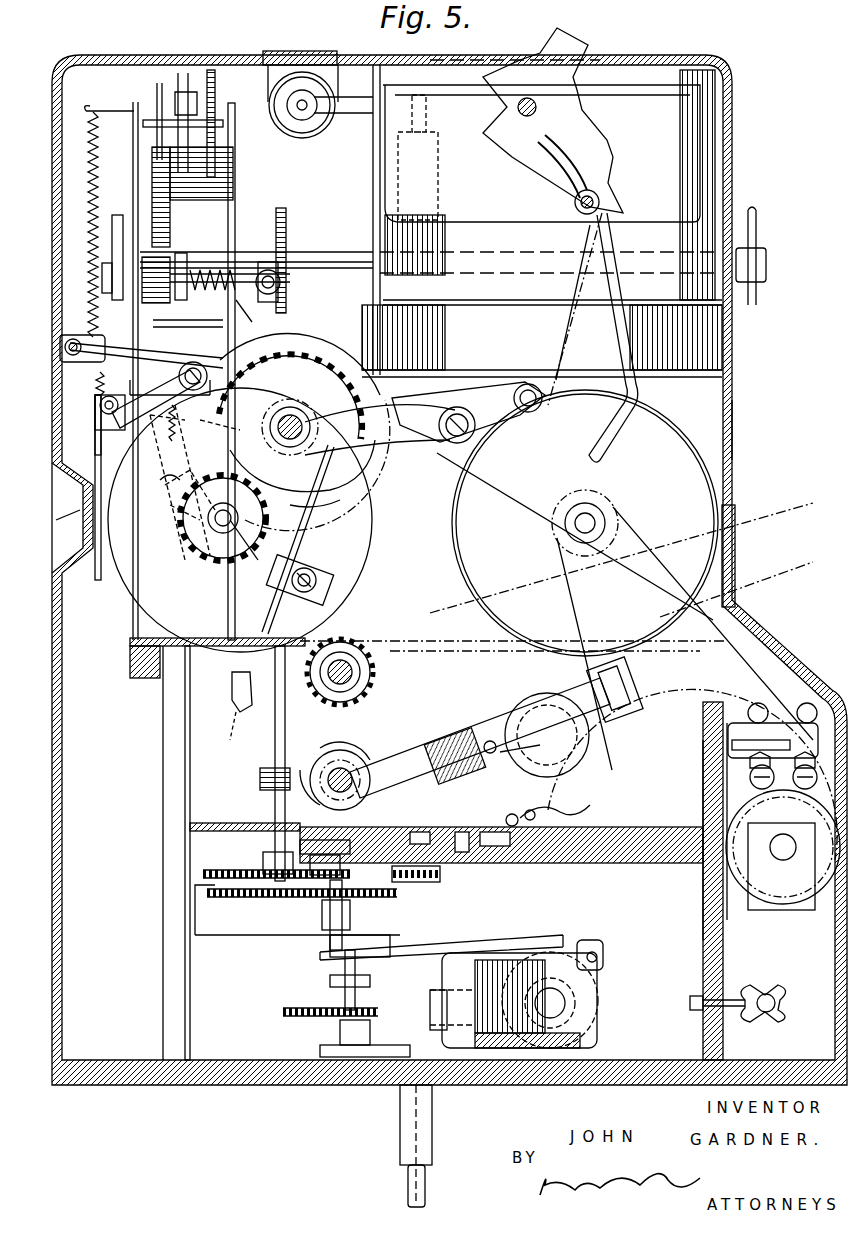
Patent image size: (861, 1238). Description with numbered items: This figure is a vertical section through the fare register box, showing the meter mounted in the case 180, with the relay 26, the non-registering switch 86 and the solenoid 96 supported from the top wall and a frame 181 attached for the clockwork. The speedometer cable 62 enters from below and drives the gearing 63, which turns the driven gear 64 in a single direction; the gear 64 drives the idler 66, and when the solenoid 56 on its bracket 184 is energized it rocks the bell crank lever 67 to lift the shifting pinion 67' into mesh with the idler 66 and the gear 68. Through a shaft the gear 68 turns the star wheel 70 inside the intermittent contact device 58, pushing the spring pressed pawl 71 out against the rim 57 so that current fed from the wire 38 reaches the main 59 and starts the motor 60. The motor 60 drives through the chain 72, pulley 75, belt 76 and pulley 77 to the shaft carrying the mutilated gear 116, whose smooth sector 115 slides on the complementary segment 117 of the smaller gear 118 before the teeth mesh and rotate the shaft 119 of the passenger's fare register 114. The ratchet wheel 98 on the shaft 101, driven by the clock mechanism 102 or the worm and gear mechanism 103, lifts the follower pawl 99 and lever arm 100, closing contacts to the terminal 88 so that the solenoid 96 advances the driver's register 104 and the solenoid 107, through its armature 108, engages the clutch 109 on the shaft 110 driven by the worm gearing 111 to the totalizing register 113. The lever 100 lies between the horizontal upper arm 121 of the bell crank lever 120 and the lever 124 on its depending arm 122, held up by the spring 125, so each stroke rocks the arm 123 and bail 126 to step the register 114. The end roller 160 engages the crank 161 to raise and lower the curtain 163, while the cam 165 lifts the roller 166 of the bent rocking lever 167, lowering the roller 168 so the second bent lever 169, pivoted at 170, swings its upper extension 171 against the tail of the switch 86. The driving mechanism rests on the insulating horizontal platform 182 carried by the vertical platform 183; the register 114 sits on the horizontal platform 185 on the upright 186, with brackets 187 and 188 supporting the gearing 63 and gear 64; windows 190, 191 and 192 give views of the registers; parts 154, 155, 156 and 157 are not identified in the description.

The relay 26 is at (722, 190).
The wire 38 is at (712, 1011).
The solenoid 56 is at (513, 1053).
The rim 57 is at (600, 840).
The intermittent contact device 58 is at (418, 830).
The main 59 is at (600, 805).
The motor 60 is at (585, 523).
The speedometer cable 62 is at (408, 1185).
The gearing 63 is at (370, 905).
The driven gear 64 is at (262, 860).
The idler 66 is at (300, 905).
The bell crank lever 67 is at (441, 935).
The shifting pinion 67' is at (326, 888).
The gear 68 is at (500, 882).
The star wheel 70 is at (462, 830).
The spring pressed pawl 71 is at (495, 830).
The chain 72 is at (612, 533).
The pulley 75 is at (700, 700).
The belt 76 is at (470, 505).
The pulley 77 is at (368, 464).
The non-registering switch 86 is at (575, 45).
The terminal 88 is at (542, 111).
The solenoid 96 is at (378, 192).
The ratchet wheel 98 is at (118, 215).
The follower pawl 99 is at (99, 405).
The lever arm 100 is at (141, 338).
The shaft 101 is at (288, 250).
The clock mechanism 102 is at (232, 170).
The worm and gear mechanism 103 is at (282, 288).
The fare register 104 is at (320, 138).
The solenoid 107 is at (525, 710).
The armature 108 is at (520, 762).
The clutch 109 is at (330, 758).
The shaft 110 is at (348, 775).
The worm gearing 111 is at (258, 776).
The totalizing fare registering device 113 is at (365, 693).
The fare register 114 is at (136, 592).
The smooth sector 115 is at (330, 538).
The mutilated gear 116 is at (305, 352).
The complementary segment 117 is at (237, 554).
The smaller gear 118 is at (175, 508).
The shaft 119 is at (215, 560).
The bell crank lever 120 is at (111, 425).
The horizontal upper arm 121 is at (98, 378).
The depending arm 122 is at (160, 480).
The rocking arm 123 is at (296, 436).
The lever 124 is at (156, 400).
The spring 125 is at (180, 419).
The bail shaped element 126 is at (211, 433).
The rod 154 is at (262, 622).
The block 155 is at (328, 596).
The arc 156 is at (330, 515).
The hook 157 is at (238, 706).
The end roller 160 is at (195, 362).
The crank 161 is at (255, 314).
The curtain 163 is at (96, 460).
The cam 165 is at (410, 398).
The roller 166 is at (320, 365).
The bent rocking lever 167 is at (470, 405).
The roller 168 is at (530, 383).
The second bent lever 169 is at (628, 333).
The pivot 170 is at (575, 203).
The upper extension 171 is at (552, 145).
The case 180 is at (733, 432).
The frame 181 is at (233, 104).
The insulating horizontal platform 182 is at (640, 865).
The vertical platform 183 is at (702, 930).
The bracket 184 is at (340, 1046).
The horizontal platform 185 is at (130, 642).
The upright 186 is at (185, 708).
The bracket 187 is at (200, 824).
The bracket 188 is at (297, 915).
The window 190 is at (80, 512).
The window 191 is at (315, 52).
The window 192 is at (736, 548).